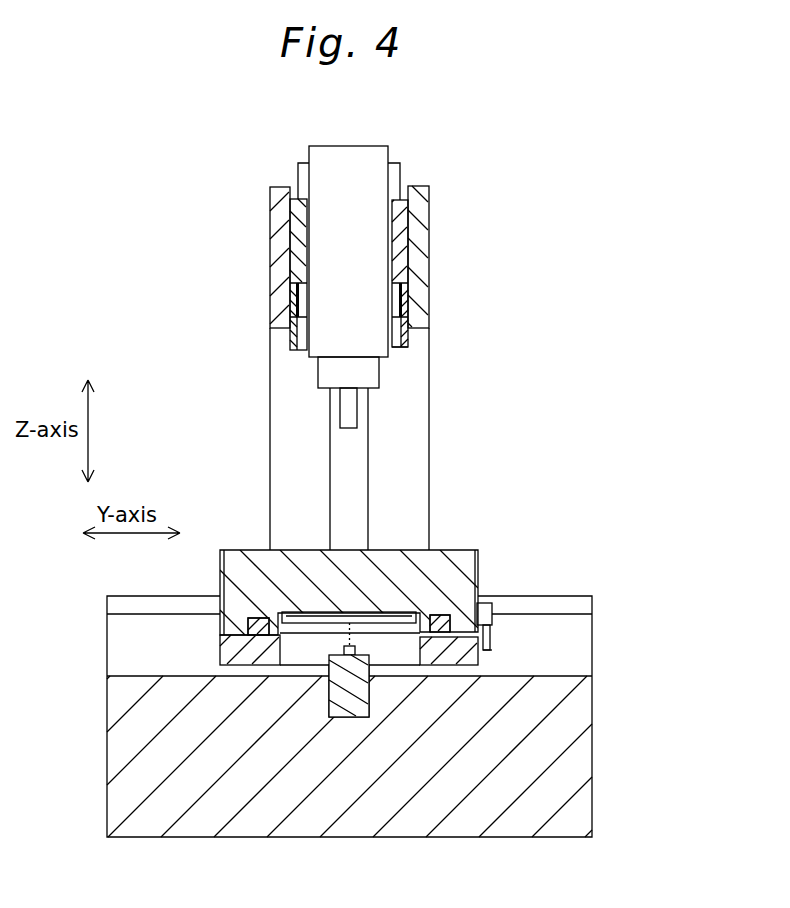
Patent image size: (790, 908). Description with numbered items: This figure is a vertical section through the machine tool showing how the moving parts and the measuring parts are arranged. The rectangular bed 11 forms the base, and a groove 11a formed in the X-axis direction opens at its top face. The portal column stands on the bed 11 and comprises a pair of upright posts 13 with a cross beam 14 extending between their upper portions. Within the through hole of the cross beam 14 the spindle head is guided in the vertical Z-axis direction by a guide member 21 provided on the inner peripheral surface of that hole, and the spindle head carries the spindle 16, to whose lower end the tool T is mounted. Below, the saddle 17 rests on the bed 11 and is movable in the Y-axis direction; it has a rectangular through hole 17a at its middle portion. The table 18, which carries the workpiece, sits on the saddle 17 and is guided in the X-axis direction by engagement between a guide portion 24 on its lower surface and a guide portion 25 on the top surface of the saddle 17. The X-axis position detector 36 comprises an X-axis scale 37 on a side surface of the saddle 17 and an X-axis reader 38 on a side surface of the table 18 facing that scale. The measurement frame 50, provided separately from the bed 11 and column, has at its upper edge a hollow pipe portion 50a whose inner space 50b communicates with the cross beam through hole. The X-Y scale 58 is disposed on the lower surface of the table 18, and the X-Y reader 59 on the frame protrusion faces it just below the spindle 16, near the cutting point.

The bed 11 is at (120, 740).
The groove 11a is at (342, 717).
The post 13 is at (277, 443).
The cross beam 14 is at (273, 200).
The spindle 16 is at (328, 377).
The saddle 17 is at (227, 648).
The through hole 17a is at (420, 648).
The table 18 is at (232, 556).
The guide member 21 is at (297, 260).
The guide portion 24 is at (257, 628).
The guide portion 25 is at (260, 632).
The X-axis position detector 36 is at (514, 646).
The X-axis scale 37 is at (492, 650).
The X-axis reader 38 is at (492, 630).
The measurement frame 50 is at (348, 710).
The pipe portion 50a is at (405, 340).
The inner space 50b is at (408, 361).
The X-Y scale 58 is at (320, 610).
The X-Y reader 59 is at (352, 645).
The tool T is at (343, 413).